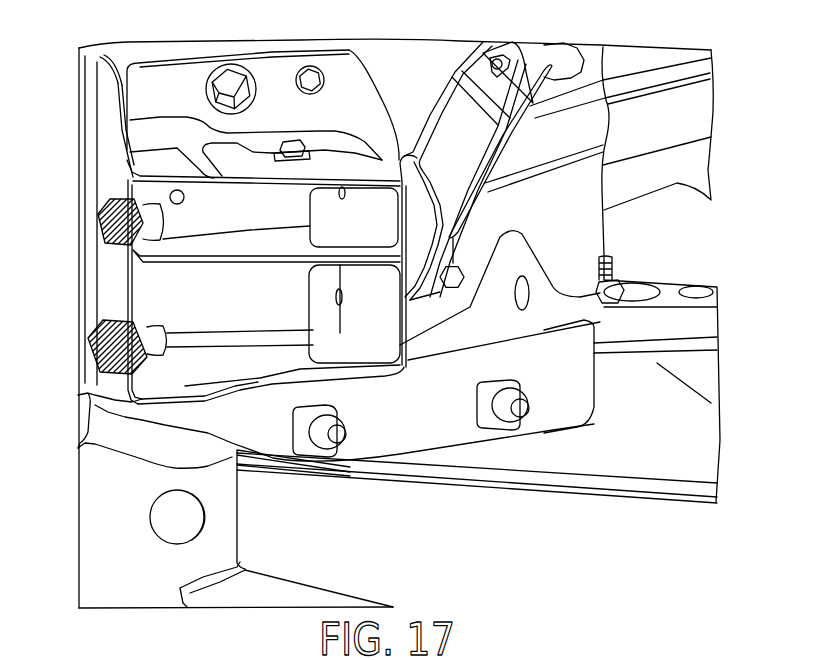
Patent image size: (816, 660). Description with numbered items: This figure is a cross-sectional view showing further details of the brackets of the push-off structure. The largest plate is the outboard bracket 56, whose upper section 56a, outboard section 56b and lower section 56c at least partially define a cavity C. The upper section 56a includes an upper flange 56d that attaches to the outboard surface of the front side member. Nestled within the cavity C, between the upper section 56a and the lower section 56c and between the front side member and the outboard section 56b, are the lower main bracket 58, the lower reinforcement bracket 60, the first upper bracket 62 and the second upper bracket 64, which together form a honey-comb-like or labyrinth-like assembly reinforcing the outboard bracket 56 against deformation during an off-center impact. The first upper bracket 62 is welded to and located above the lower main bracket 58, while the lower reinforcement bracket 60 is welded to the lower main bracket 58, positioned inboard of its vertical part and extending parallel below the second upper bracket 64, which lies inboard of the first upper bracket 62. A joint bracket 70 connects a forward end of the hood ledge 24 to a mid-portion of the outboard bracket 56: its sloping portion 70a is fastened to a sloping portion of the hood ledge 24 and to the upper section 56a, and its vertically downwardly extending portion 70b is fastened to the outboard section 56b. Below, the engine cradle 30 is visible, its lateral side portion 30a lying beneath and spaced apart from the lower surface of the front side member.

The hood ledge 24 is at (538, 47).
The engine cradle 30 is at (297, 564).
The lateral side portion 30a is at (320, 597).
The outboard bracket 56 is at (446, 212).
The upper section 56a is at (240, 163).
The outboard section 56b is at (425, 317).
The lower section 56c is at (300, 383).
The upper flange 56d is at (160, 90).
The lower main bracket 58 is at (380, 263).
The lower reinforcement bracket 60 is at (337, 340).
The first upper bracket 62 is at (442, 210).
The second upper bracket 64 is at (310, 212).
The joint bracket 70 is at (449, 133).
The sloping portion 70a is at (395, 127).
The vertically downwardly extending portion 70b is at (472, 140).
The cavity C is at (170, 293).